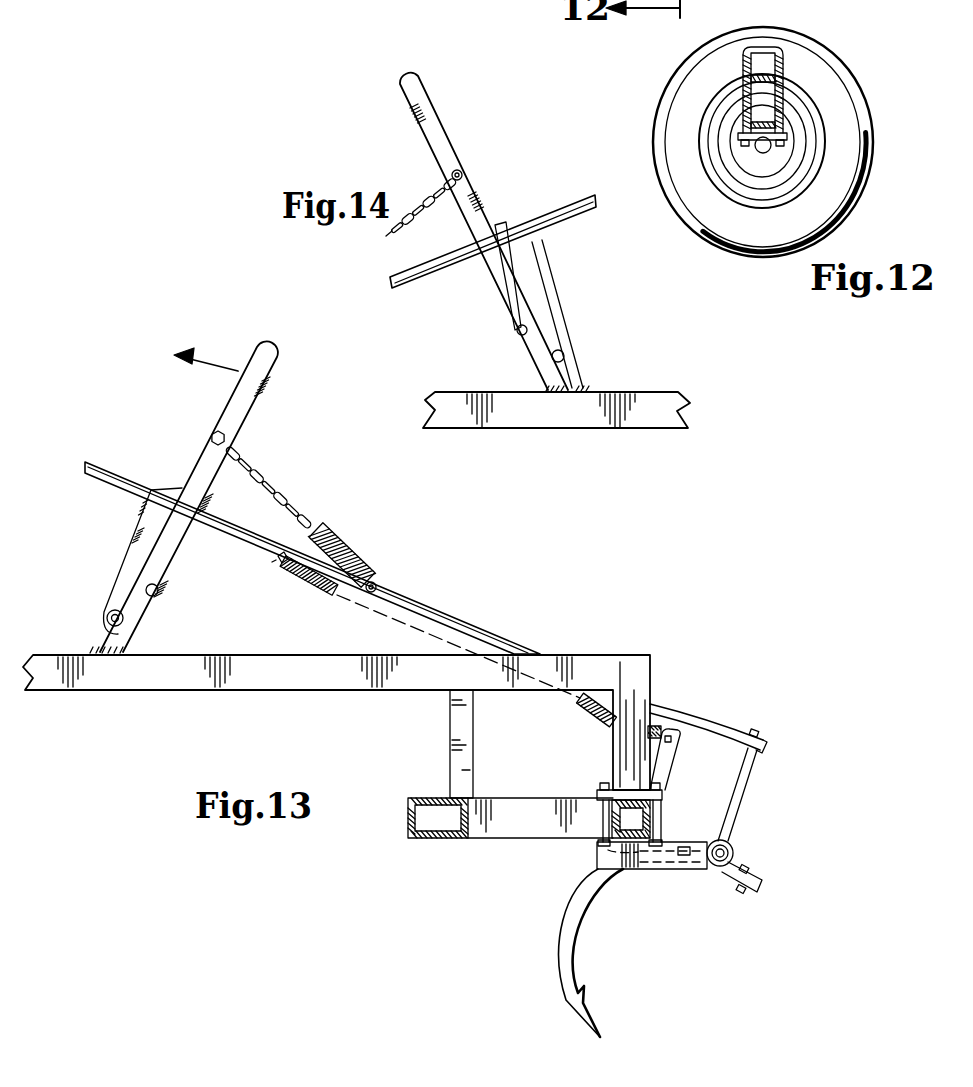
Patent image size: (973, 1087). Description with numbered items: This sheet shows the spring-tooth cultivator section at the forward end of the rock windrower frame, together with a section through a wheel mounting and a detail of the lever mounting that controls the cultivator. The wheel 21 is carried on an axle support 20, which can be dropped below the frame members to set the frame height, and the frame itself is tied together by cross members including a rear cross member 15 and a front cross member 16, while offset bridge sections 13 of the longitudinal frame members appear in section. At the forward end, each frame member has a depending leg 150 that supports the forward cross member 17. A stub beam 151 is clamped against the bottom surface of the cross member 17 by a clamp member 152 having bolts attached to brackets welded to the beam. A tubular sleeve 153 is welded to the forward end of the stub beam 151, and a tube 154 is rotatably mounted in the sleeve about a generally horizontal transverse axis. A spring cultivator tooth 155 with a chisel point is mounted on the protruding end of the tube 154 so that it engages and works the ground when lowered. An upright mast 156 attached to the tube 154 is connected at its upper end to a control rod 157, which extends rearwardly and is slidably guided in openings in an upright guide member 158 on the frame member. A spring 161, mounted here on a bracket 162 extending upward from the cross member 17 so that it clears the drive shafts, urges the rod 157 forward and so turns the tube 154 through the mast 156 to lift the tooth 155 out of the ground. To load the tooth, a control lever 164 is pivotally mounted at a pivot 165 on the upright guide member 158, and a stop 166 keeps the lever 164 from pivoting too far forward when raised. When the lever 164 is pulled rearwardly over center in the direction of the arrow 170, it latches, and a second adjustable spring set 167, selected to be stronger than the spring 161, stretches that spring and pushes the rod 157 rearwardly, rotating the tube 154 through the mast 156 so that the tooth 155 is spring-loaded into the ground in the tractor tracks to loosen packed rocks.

In FIG. 14, the offset bridge section 13 is at (628, 396).
In FIG. 13, the offset bridge section 13 is at (268, 657).
In FIG. 12, the rear cross member 15 is at (777, 48).
In FIG. 13, the front cross member 16 is at (445, 838).
In FIG. 13, the forward cross member 17 is at (642, 818).
In FIG. 12, the axle support 20 is at (746, 95).
In FIG. 12, the wheel 21 is at (845, 61).
In FIG. 13, the depending leg 150 is at (628, 728).
In FIG. 13, the stub beam 151 is at (645, 873).
In FIG. 13, the clamp member 152 is at (601, 790).
In FIG. 13, the sleeve 153 is at (735, 849).
In FIG. 13, the tube 154 is at (735, 855).
In FIG. 13, the spring cultivator tooth 155 is at (558, 950).
In FIG. 13, the upright mast 156 is at (752, 762).
In FIG. 13, the control rod 157 is at (720, 727).
In FIG. 14, the upright guide member 158 is at (508, 220).
In FIG. 13, the upright guide member 158 is at (165, 488).
In FIG. 13, the spring 161 is at (314, 585).
In FIG. 13, the bracket 162 is at (676, 750).
In FIG. 14, the control lever 164 is at (447, 140).
In FIG. 13, the control lever 164 is at (249, 400).
In FIG. 14, the pivot 165 is at (564, 356).
In FIG. 13, the pivot 165 is at (108, 612).
In FIG. 14, the stop 166 is at (517, 331).
In FIG. 13, the stop 166 is at (158, 590).
In FIG. 13, the second adjustable spring set 167 is at (337, 537).
In FIG. 13, the arrow 170 is at (213, 355).